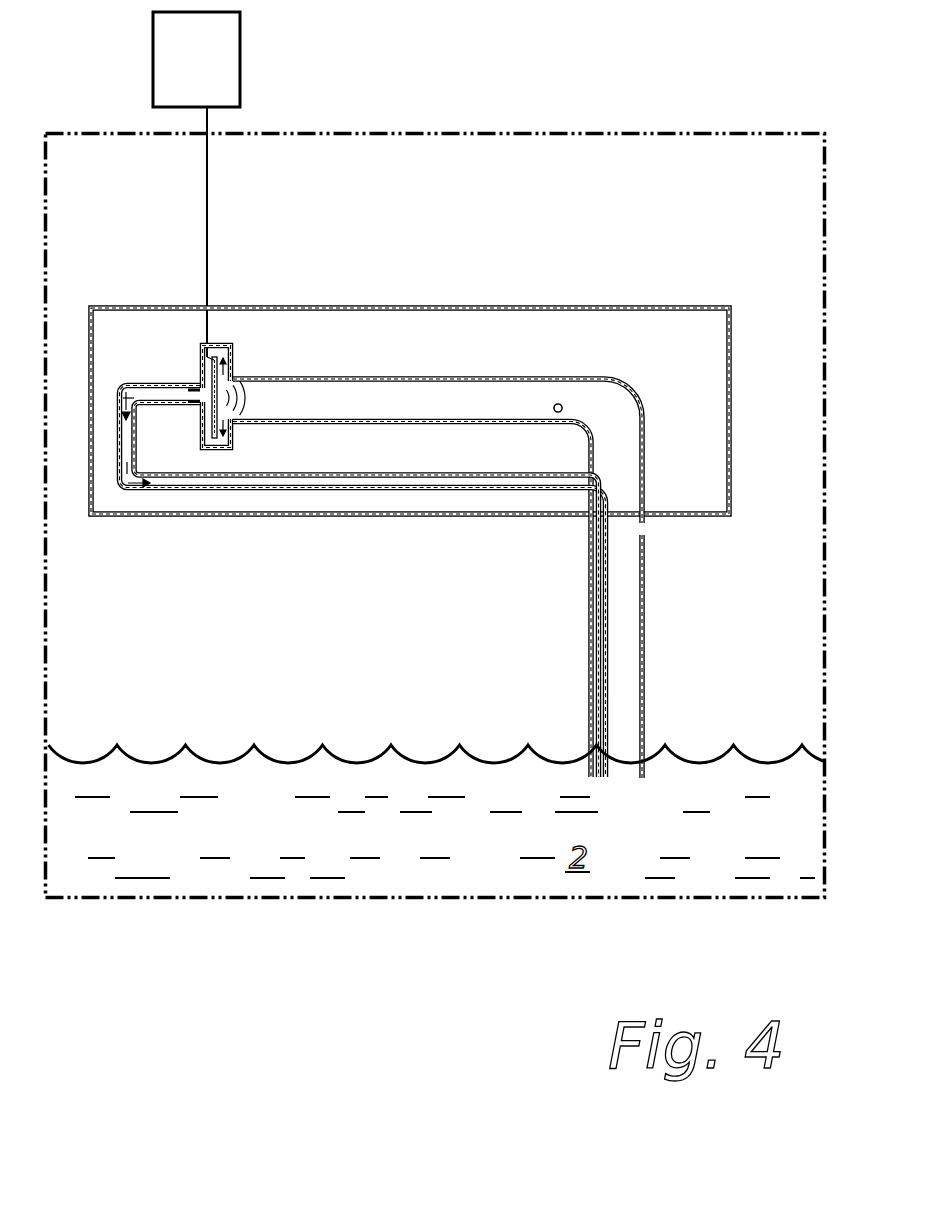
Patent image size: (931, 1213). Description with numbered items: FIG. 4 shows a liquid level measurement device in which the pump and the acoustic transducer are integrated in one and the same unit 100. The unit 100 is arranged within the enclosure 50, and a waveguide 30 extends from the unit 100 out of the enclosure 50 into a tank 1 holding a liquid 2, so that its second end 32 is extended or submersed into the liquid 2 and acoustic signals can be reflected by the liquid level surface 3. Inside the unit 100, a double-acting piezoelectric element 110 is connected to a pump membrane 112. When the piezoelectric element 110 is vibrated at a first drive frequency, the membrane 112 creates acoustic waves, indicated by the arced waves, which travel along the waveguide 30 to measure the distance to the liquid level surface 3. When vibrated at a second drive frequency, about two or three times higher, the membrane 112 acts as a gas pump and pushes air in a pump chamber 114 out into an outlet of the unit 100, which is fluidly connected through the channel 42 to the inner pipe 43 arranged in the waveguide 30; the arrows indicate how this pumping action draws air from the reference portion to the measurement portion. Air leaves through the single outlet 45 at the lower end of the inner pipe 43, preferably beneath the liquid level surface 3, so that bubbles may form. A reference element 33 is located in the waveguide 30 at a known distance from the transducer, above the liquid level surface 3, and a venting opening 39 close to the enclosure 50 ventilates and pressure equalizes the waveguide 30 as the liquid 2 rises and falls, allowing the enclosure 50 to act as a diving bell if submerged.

The tank 1 is at (397, 131).
The liquid 2 is at (222, 60).
The liquid level surface 3 is at (352, 742).
The waveguide 30 is at (480, 513).
The second end 32 is at (644, 774).
The reference element 33 is at (556, 404).
The venting opening 39 is at (646, 531).
The channel 42 is at (399, 676).
The inner pipe 43 is at (690, 676).
The single outlet 45 is at (611, 765).
The enclosure 50 is at (342, 307).
The unit 100 is at (429, 593).
The double-acting piezoelectric element 110 is at (282, 352).
The pump membrane 112 is at (214, 447).
The pump chamber 114 is at (212, 449).